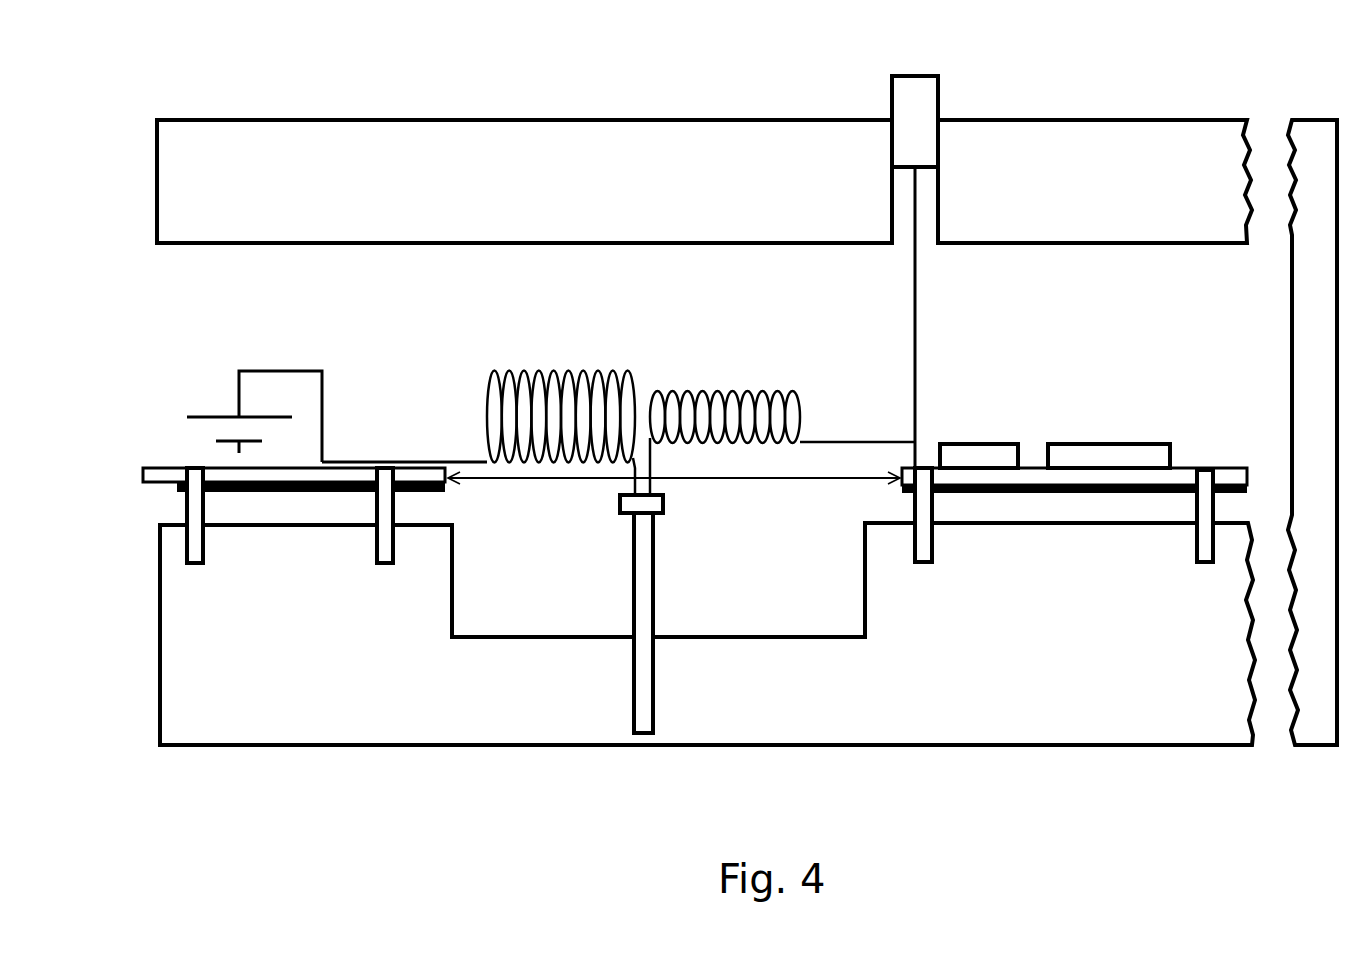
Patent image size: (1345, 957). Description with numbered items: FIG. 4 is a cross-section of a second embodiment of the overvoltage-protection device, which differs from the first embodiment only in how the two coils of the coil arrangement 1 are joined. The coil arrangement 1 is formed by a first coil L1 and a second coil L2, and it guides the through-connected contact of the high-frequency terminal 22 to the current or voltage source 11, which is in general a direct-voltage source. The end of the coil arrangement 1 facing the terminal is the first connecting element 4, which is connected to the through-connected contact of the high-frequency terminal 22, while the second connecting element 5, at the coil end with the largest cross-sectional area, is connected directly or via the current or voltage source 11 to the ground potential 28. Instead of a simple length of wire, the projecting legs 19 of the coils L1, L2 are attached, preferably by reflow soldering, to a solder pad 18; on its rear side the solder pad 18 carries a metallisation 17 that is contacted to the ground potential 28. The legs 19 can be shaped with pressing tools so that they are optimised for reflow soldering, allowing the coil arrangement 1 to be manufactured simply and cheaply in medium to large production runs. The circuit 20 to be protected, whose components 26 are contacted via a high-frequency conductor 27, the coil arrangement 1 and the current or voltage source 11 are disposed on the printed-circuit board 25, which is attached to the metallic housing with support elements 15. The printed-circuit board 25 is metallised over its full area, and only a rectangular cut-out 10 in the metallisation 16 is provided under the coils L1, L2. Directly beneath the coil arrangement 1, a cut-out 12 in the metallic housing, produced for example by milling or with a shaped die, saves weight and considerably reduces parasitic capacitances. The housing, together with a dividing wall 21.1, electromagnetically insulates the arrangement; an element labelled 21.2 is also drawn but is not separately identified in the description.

The coil arrangement 1 is at (663, 352).
The first connecting element 4 is at (797, 438).
The second connecting element 5 is at (482, 458).
The rectangular cut-out 10 is at (545, 480).
The current source or voltage source 11 is at (277, 418).
The cut-out 12 is at (485, 605).
The support elements 15 is at (382, 567).
The metallisation 16 is at (247, 492).
The metallisation 17 is at (670, 507).
The solder pad 18 is at (668, 503).
The projecting legs 19 is at (628, 470).
The circuit 20 is at (629, 500).
The dividing wall 21.1 is at (1313, 652).
The upper beam 21.2 is at (541, 118).
The high-frequency terminal 22 is at (916, 118).
The printed-circuit board 25 is at (1028, 480).
The components 26 is at (975, 458).
The high-frequency conductor 27 is at (912, 208).
The ground potential 28 is at (1237, 468).
The first coil L1 is at (723, 390).
The second coil L2 is at (540, 370).